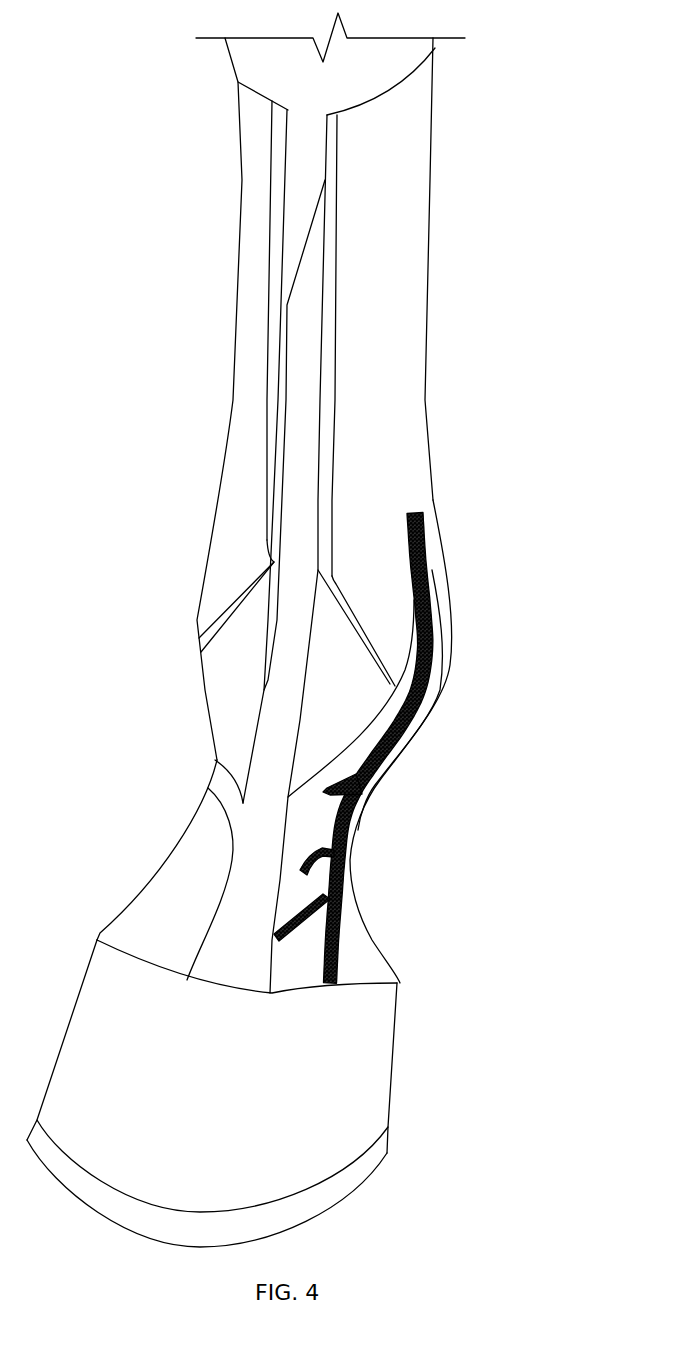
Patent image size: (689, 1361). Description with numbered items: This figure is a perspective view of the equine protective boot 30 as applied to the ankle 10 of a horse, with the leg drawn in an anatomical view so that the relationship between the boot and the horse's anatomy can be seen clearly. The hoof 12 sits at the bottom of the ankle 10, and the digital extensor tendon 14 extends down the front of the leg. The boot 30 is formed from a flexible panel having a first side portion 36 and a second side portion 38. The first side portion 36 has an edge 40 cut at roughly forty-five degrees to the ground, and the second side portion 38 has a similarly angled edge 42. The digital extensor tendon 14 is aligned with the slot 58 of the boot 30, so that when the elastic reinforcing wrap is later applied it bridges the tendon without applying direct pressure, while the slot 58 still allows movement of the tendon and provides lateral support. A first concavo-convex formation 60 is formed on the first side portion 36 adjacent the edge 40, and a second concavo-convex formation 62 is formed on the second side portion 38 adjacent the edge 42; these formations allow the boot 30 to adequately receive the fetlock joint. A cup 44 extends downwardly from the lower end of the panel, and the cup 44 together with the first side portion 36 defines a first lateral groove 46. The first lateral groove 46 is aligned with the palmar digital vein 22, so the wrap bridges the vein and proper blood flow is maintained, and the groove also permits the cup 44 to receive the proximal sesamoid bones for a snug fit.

The ankle 10 is at (405, 866).
The hoof 12 is at (398, 1010).
The digital extensor tendon 14 is at (297, 388).
The palmar digital vein 22 is at (424, 710).
The equine protective boot 30 is at (529, 66).
The first side portion 36 is at (407, 247).
The second side portion 38 is at (252, 247).
The edge 40 is at (349, 613).
The edge 42 is at (226, 613).
The cup 44 is at (450, 675).
The first lateral groove 46 is at (432, 590).
The slot 58 is at (310, 109).
The first concavo-convex formation 60 is at (396, 549).
The second concavo-convex formation 62 is at (252, 551).